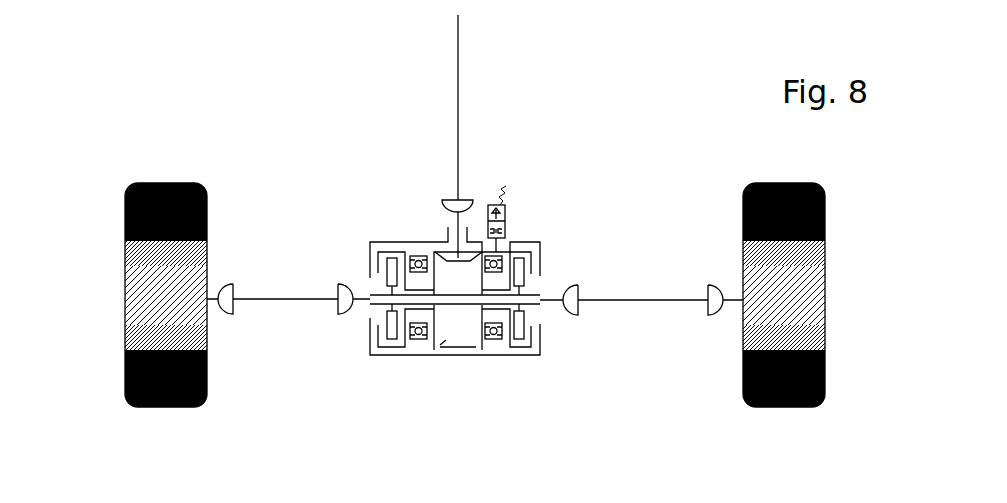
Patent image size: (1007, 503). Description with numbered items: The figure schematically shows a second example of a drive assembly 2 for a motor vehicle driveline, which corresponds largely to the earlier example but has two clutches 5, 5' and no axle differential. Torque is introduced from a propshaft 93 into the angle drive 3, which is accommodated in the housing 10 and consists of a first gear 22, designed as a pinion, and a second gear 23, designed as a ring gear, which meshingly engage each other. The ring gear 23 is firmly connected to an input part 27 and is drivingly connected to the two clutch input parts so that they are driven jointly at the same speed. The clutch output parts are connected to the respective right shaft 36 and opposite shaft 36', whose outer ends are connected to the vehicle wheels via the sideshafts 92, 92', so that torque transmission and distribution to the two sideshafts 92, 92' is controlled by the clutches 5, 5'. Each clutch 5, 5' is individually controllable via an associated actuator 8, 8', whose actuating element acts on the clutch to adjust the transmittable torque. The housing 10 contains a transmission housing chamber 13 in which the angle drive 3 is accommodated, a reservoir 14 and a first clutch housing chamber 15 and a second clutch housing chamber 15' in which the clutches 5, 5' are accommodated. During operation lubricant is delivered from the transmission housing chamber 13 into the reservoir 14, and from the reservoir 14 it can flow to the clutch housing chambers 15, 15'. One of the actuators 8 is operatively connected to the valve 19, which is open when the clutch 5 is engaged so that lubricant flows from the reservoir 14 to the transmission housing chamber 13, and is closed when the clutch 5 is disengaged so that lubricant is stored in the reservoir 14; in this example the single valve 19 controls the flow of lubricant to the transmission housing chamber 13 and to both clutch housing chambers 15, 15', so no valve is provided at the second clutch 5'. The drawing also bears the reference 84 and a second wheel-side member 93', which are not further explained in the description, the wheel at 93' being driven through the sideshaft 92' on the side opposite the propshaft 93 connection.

The drive assembly 2 is at (386, 188).
The first gearing 3 is at (434, 239).
The clutch 5 is at (533, 264).
The clutch 5' is at (397, 342).
The actuator 8 is at (496, 344).
The actuator 8' is at (420, 344).
The housing 10 is at (372, 238).
The transmission housing chamber 13 is at (457, 345).
The reservoir 14 is at (477, 227).
The clutch housing chamber 15 is at (528, 356).
The clutch housing chamber 15' is at (375, 392).
The valve 19 is at (510, 196).
The first gear 22 is at (458, 270).
The second gear 23 is at (440, 345).
The input part 27 is at (468, 308).
The right shaft 36 is at (581, 281).
The shaft 36' is at (342, 265).
The drive axle 84 is at (94, 297).
The sideshaft 92 is at (660, 272).
The sideshaft 92' is at (272, 263).
The propshaft 93 is at (672, 211).
The wheel 93' is at (132, 295).